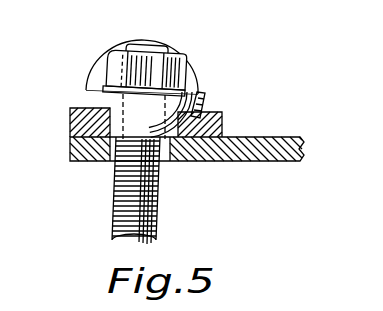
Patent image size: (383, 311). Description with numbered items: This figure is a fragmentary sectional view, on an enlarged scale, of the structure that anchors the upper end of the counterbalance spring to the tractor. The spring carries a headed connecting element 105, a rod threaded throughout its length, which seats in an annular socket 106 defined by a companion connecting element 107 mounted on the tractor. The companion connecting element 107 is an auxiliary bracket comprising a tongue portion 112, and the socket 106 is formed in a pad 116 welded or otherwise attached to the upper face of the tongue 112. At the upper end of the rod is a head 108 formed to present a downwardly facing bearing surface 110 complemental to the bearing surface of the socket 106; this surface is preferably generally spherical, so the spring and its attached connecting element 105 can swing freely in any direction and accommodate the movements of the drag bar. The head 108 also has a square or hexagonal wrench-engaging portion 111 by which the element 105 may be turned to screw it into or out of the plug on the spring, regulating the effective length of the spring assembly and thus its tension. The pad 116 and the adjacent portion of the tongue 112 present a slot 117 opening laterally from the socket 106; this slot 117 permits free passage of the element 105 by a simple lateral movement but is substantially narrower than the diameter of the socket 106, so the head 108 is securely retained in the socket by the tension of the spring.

The headed connecting element 105 is at (159, 210).
The annular socket 106 is at (199, 103).
The companion connecting element 107 is at (233, 161).
The head 108 is at (110, 66).
The bearing surface 110 is at (88, 103).
The wrench-engaging portion 111 is at (155, 49).
The tongue portion 112 is at (273, 143).
The pad 116 is at (223, 121).
The slot 117 is at (110, 152).